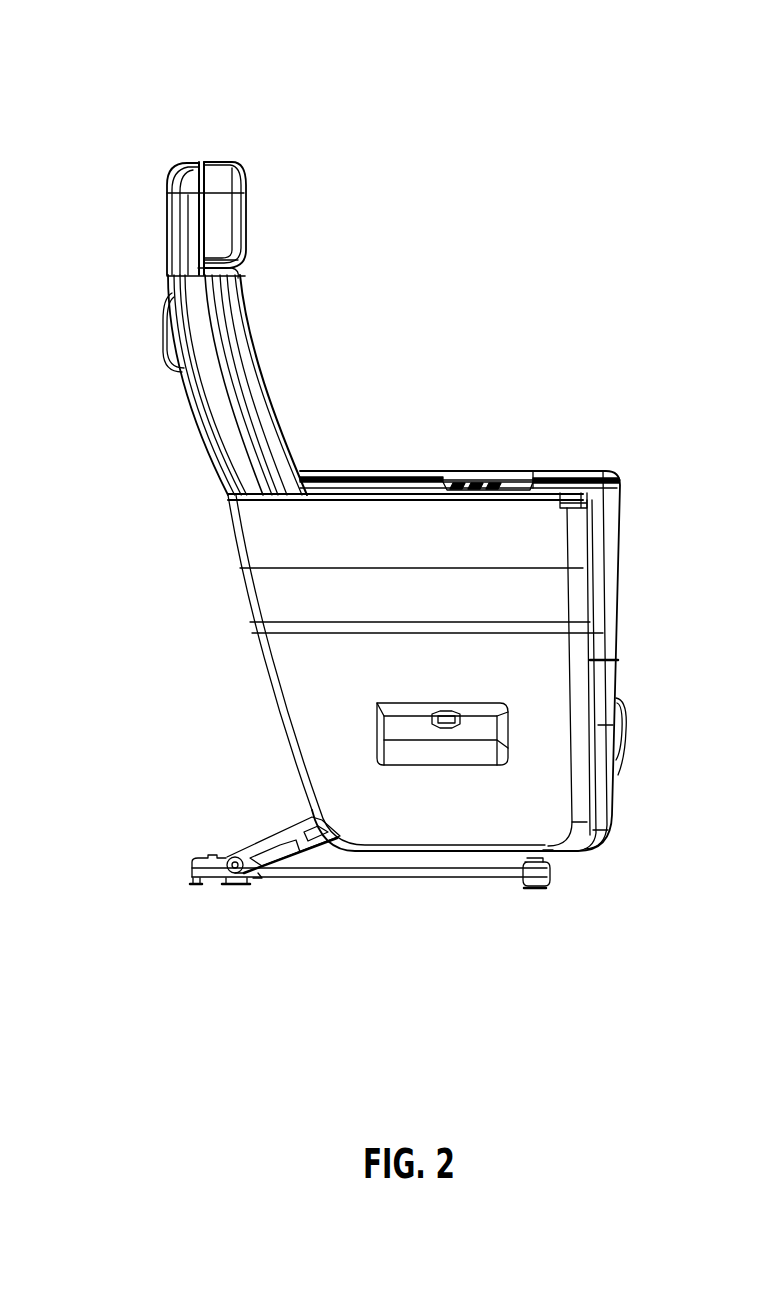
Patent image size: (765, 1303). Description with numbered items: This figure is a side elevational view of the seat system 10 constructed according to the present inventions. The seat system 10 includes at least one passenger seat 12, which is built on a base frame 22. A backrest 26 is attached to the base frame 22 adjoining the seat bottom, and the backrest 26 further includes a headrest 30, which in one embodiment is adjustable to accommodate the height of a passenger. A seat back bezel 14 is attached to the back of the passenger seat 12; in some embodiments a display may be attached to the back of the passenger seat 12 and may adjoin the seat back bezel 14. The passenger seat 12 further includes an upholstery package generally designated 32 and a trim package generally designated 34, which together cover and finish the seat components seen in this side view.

The seat system 10 is at (512, 94).
The passenger seat 12 is at (382, 486).
The seat back bezel 14 is at (165, 255).
The base frame 22 is at (234, 857).
The backrest 26 is at (197, 174).
The headrest 30 is at (218, 180).
The upholstery package 32 is at (217, 412).
The trim package 34 is at (250, 358).